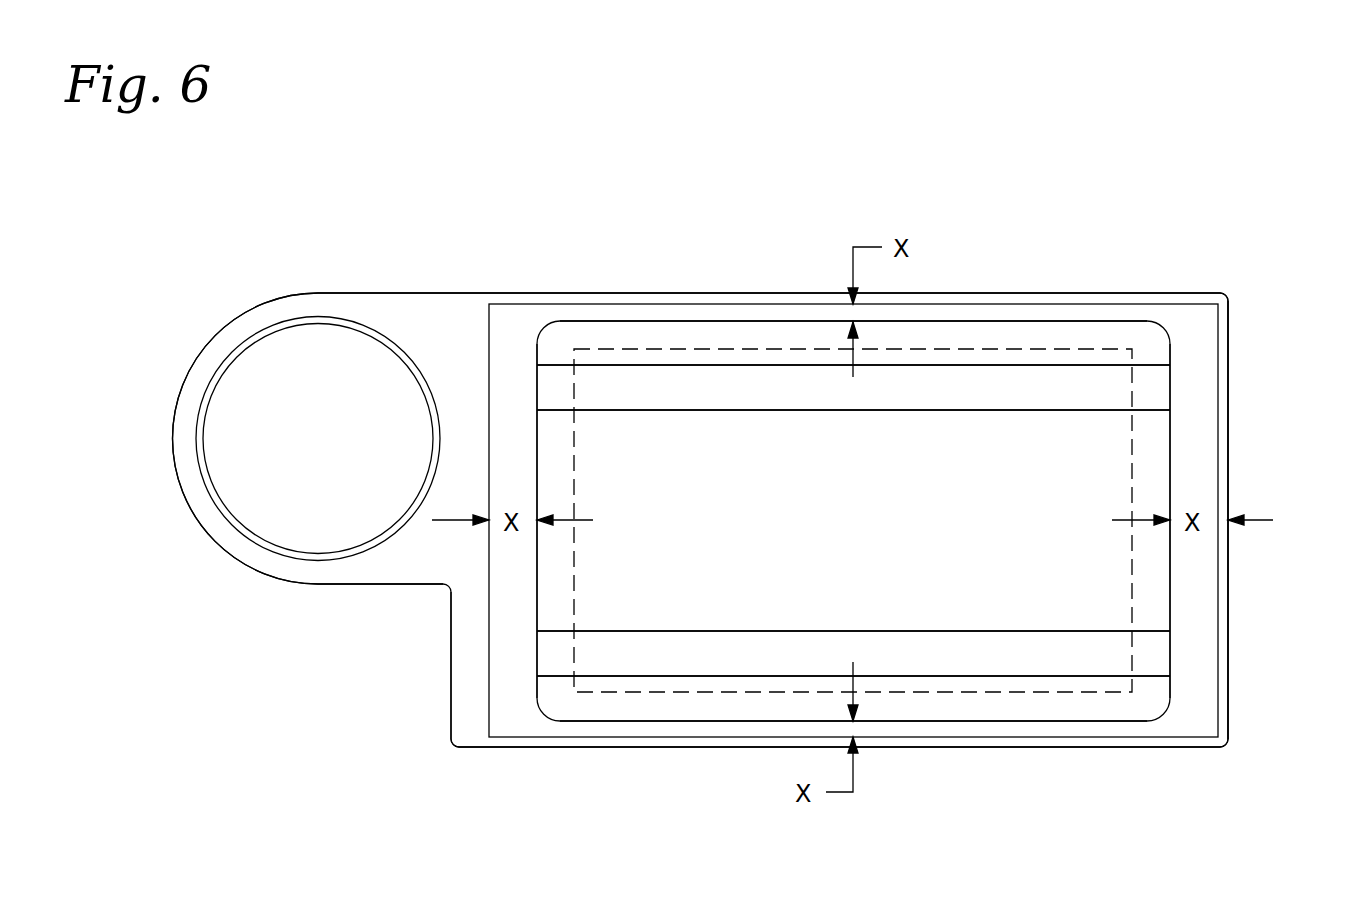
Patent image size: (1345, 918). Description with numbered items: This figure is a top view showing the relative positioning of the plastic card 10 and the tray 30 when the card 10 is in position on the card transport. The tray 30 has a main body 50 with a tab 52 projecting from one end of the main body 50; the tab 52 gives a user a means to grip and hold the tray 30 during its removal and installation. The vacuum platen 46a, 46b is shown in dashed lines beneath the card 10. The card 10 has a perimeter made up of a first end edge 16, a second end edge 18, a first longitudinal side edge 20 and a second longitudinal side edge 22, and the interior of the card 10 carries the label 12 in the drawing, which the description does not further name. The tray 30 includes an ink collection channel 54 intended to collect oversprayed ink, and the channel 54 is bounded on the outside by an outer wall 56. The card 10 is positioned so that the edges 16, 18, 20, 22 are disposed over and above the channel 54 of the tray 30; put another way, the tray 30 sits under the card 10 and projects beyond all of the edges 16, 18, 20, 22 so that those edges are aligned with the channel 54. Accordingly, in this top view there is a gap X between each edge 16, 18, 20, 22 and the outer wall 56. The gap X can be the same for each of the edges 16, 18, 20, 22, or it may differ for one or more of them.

The plastic card 10 is at (977, 720).
The interior chamber 12 is at (693, 442).
The first end edge 16 is at (1170, 589).
The second end edge 18 is at (537, 604).
The first longitudinal side edge 20 is at (752, 736).
The second longitudinal side edge 22 is at (800, 322).
The tray 30 is at (573, 772).
The vacuum platen 46a is at (869, 469).
The vacuum platen 46b is at (985, 350).
The main body 50 is at (593, 290).
The tab 52 is at (362, 292).
The ink collection channel 54 is at (513, 344).
The outer wall 56 is at (1173, 293).